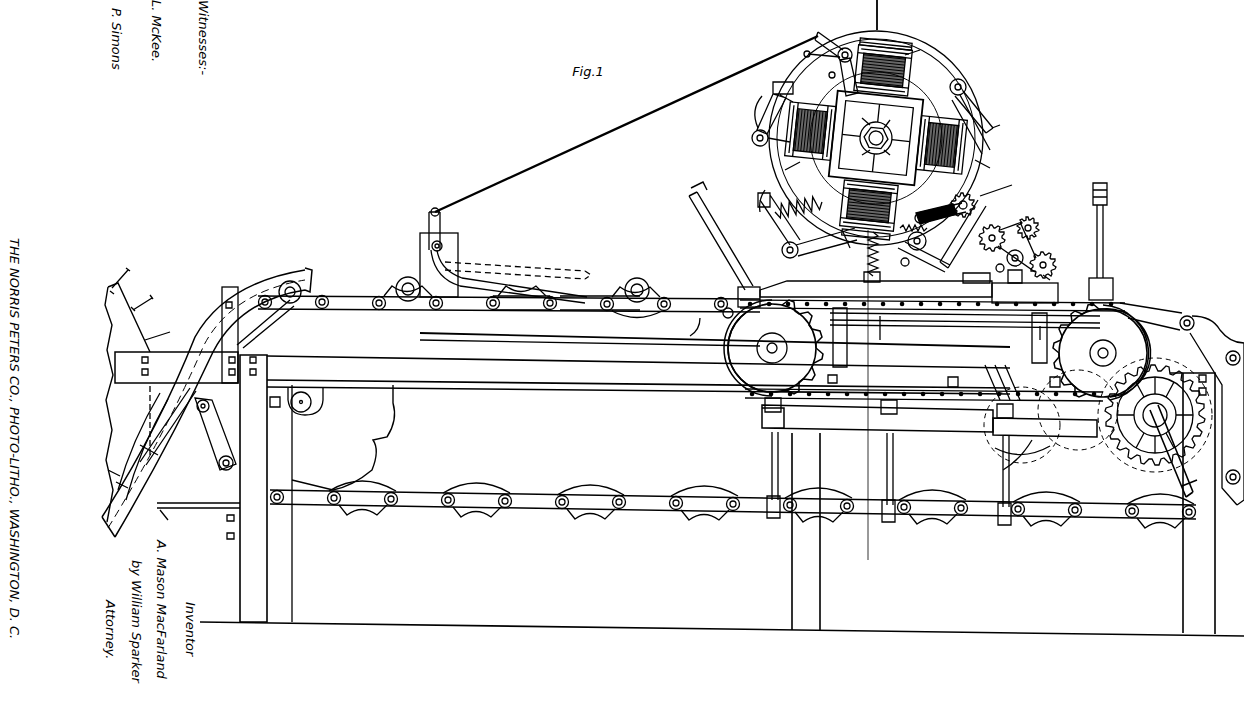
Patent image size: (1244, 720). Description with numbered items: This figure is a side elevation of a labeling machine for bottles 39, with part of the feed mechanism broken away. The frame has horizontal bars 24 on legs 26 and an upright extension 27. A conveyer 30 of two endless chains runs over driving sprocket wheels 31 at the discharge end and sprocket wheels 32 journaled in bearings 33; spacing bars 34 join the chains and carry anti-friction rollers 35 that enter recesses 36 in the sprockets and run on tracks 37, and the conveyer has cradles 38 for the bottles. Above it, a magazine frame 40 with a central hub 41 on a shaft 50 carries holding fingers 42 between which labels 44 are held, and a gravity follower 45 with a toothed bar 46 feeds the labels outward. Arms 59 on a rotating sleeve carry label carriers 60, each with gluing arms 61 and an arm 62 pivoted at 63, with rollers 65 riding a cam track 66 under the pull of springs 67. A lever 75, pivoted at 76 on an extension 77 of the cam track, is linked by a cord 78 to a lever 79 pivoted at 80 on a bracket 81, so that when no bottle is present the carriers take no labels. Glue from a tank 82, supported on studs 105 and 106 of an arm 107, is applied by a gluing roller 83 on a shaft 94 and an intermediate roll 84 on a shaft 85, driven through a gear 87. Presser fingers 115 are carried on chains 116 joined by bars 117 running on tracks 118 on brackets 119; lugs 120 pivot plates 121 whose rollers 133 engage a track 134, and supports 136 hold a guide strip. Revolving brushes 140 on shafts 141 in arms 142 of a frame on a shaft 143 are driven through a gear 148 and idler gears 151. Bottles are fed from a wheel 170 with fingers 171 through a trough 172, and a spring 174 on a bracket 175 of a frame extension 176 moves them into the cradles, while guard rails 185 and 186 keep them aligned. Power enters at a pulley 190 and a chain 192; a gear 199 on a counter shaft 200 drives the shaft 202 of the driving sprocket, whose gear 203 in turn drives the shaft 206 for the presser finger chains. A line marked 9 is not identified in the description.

The reference line 9 is at (863, 409).
The horizontal bar 24 is at (638, 375).
The leg 26 is at (727, 494).
The upright extension 27 is at (805, 271).
The conveyer 30 is at (348, 297).
The driving sprocket wheel 31 is at (1217, 410).
The sprocket wheel 32 is at (343, 437).
The bearing 33 is at (310, 392).
The spacing bar 34 is at (608, 296).
The anti-friction roller 35 is at (608, 316).
The recess 36 is at (394, 403).
The track 37 is at (534, 314).
The cradle 38 is at (696, 520).
The bottle 39 is at (640, 280).
The magazine supporting frame 40 is at (895, 119).
The central hub 41 is at (858, 115).
The holding finger 42 is at (897, 167).
The label 44 is at (990, 150).
The gravity-actuated follower 45 is at (925, 70).
The toothed bar 46 is at (859, 157).
The shaft 50 is at (894, 158).
The arm 59 is at (886, 175).
The label carrier 60 is at (772, 222).
The carrier arm 61 is at (772, 86).
The pivot arm 62 is at (757, 120).
The pivot 63 is at (757, 145).
The roller 65 is at (754, 194).
The cam track 66 is at (830, 80).
The spring 67 is at (975, 105).
The lever 75 is at (841, 45).
The pivot 76 is at (813, 36).
The extension 77 is at (806, 56).
The cord 78 is at (600, 130).
The lever 79 is at (442, 220).
The pivot 80 is at (445, 246).
The bracket 81 is at (452, 258).
The glue tank 82 is at (985, 212).
The gluing roller 83 is at (978, 200).
The intermediate roll 84 is at (933, 210).
The shaft 85 is at (932, 205).
The gear 87 is at (820, 197).
The shaft 94 is at (1014, 186).
The stud 105 is at (924, 261).
The stud 106 is at (909, 251).
The arm 107 is at (861, 254).
The presser finger 115 is at (1104, 245).
The chain 116 is at (930, 322).
The bar 117 is at (877, 419).
The track 118 is at (988, 322).
The bracket 119 is at (847, 345).
The lug 120 is at (927, 286).
The plate 121 is at (740, 292).
The roller 133 is at (735, 270).
The track 134 is at (1029, 286).
The support 136 is at (945, 396).
The revolving brush 140 is at (1036, 228).
The brush shaft 141 is at (1048, 268).
The arm 142 is at (1045, 255).
The shaft 143 is at (985, 250).
The gear 148 is at (1025, 293).
The idler gear 151 is at (1015, 240).
The bottle carrying wheel 170 is at (127, 402).
The finger 171 is at (165, 333).
The guide trough 172 is at (207, 402).
The spring 174 is at (188, 414).
The bracket 175 is at (146, 420).
The frame extension 176 is at (184, 335).
The guard rail 185 is at (576, 285).
The guard rail 186 is at (700, 327).
The pulley 190 is at (1025, 452).
The chain 192 is at (985, 360).
The gear 199 is at (1062, 452).
The counter shaft 200 is at (1045, 427).
The shaft 202 is at (1155, 404).
The gear 203 is at (1167, 335).
The shaft 206 is at (1102, 355).